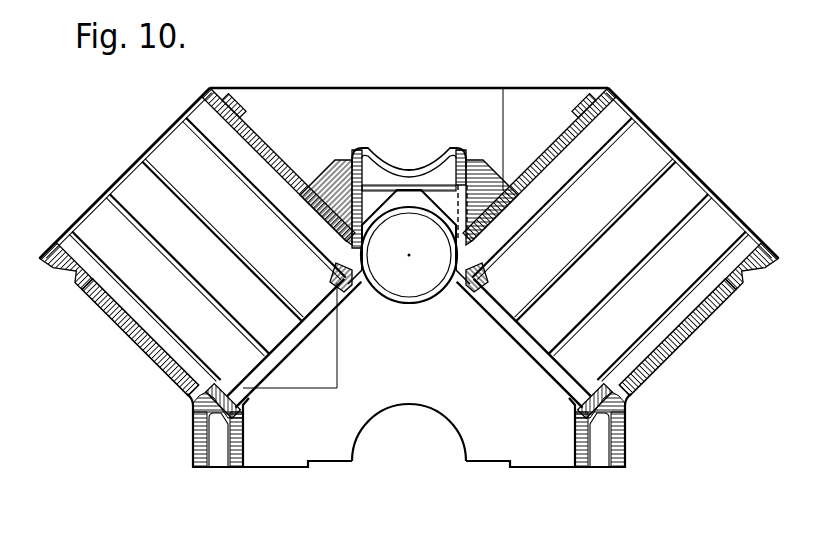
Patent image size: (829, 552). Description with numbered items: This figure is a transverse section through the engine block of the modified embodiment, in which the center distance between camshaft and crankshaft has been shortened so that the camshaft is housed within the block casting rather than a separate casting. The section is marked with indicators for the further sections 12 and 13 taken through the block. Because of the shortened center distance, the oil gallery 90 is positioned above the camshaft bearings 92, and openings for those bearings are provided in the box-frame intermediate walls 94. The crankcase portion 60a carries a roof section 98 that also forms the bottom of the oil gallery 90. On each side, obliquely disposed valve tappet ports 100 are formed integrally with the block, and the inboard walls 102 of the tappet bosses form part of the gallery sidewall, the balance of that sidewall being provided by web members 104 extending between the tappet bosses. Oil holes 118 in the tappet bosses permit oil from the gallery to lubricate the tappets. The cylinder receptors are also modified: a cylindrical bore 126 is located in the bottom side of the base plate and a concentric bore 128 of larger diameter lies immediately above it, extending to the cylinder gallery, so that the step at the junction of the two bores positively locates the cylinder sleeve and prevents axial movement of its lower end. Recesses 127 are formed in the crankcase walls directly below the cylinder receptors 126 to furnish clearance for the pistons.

The section line 12- 12 is at (438, 515).
The section line 13- 13 is at (293, 176).
The crankcase portion 60a is at (565, 498).
The oil gallery 90 is at (437, 168).
The camshaft bearings 92 is at (433, 277).
The box-frame intermediate walls 94 is at (284, 447).
The roof section 98 is at (409, 187).
The valve tappet ports 100 is at (326, 188).
The inboard walls of the tappet bosses 102 is at (466, 170).
The web members 104 is at (371, 168).
The oil holes 118 is at (373, 168).
The cylindrical bore 126 is at (343, 292).
The recesses 127 is at (318, 362).
The concentric bore 128 is at (305, 293).